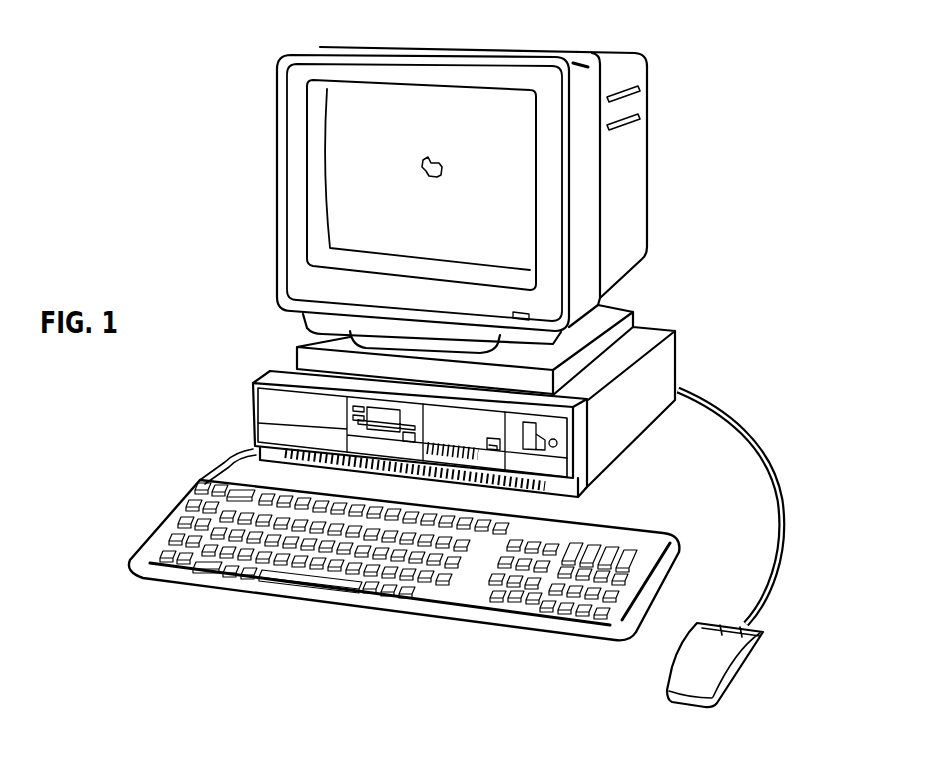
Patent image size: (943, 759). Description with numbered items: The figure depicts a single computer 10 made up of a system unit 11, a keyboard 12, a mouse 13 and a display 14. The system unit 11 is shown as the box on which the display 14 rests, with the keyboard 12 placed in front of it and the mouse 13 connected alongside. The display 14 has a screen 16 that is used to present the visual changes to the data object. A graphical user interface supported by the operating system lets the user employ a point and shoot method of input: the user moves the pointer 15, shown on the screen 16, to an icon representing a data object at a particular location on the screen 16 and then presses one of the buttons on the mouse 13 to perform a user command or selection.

The computer 10 is at (222, 253).
The system unit 11 is at (253, 398).
The keyboard 12 is at (157, 585).
The mouse 13 is at (755, 655).
The display 14 is at (277, 177).
The pointer 15 is at (425, 158).
The screen 16 is at (392, 208).